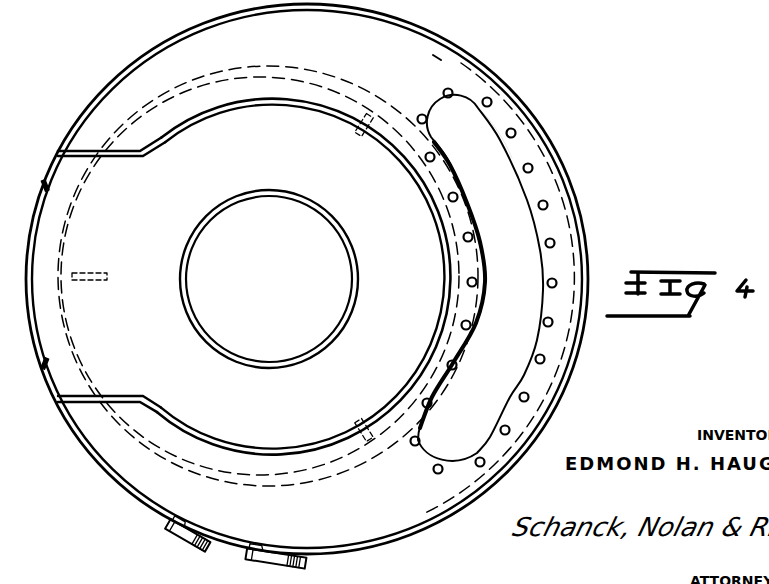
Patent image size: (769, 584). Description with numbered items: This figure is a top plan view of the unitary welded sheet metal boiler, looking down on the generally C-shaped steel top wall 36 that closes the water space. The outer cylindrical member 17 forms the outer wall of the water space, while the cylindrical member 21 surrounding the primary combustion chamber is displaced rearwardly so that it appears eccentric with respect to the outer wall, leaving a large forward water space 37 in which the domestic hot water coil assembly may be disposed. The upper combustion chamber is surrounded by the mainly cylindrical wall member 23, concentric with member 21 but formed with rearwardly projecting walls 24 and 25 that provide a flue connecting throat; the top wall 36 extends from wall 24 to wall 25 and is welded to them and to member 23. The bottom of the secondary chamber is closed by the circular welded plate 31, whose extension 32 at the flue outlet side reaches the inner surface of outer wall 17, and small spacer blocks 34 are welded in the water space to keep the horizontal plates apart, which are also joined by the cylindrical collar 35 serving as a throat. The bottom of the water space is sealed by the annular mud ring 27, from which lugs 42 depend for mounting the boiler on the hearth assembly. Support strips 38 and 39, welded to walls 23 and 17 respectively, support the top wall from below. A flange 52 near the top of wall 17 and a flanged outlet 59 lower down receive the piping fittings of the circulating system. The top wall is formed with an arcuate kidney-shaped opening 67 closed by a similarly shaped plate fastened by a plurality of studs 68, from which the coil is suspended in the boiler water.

The outer cylindrical member 17 is at (537, 124).
The cylindrical member 21 is at (360, 68).
The wall member 23 is at (257, 108).
The rearwardly projecting wall 24 is at (140, 396).
The rearwardly projecting wall 25 is at (137, 158).
The mud ring 27 is at (690, 8).
The welded plate 31 is at (400, 313).
The extension 32 is at (57, 216).
The spacer blocks 34 is at (100, 270).
The cylindrical collar 35 is at (340, 226).
The top wall 36 is at (437, 57).
The forward water space 37 is at (505, 386).
The support strip 38 is at (440, 338).
The support strip 39 is at (460, 494).
The lugs 42 is at (603, 1).
The flange 52 is at (300, 562).
The flanged outlet 59 is at (165, 532).
The kidney-shaped opening 67 is at (512, 158).
The studs 68 is at (550, 243).